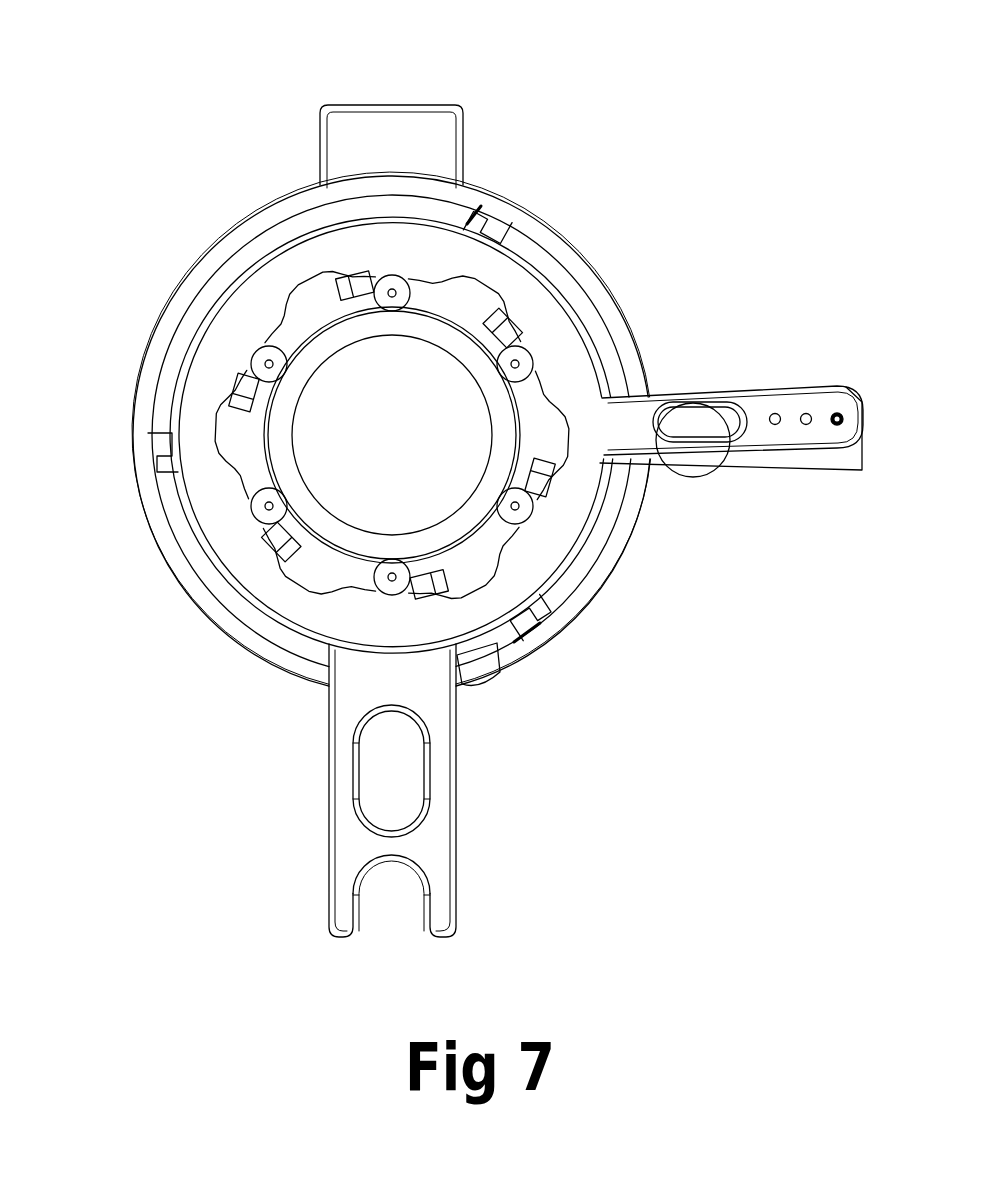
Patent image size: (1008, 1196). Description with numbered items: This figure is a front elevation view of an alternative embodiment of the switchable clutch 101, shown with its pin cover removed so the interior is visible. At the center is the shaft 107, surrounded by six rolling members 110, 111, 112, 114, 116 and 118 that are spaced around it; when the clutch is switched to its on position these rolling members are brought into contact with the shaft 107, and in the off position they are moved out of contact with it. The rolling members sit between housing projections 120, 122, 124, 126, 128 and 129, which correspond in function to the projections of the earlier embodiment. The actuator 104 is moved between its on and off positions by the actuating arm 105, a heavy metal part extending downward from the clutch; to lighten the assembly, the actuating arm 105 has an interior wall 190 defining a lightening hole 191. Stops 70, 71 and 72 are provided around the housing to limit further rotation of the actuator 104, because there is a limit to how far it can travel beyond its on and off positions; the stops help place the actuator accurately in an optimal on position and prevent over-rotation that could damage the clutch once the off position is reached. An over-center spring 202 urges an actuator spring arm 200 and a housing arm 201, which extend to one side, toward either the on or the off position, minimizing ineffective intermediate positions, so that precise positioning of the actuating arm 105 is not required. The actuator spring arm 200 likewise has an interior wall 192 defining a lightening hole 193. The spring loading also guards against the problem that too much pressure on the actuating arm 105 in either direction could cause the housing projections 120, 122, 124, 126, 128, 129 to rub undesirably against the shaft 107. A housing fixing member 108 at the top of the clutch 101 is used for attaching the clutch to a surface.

The stop 70 is at (483, 205).
The stop 71 is at (540, 627).
The stop 72 is at (157, 463).
The clutch 101 is at (132, 357).
The actuator 104 is at (487, 262).
The actuating arm 105 is at (456, 812).
The shaft 107 is at (275, 347).
The housing fixing member 108 is at (412, 103).
The rolling member 110 is at (268, 363).
The rolling member 111 is at (388, 290).
The rolling member 112 is at (518, 362).
The rolling member 114 is at (515, 506).
The rolling member 116 is at (391, 578).
The rolling member 118 is at (268, 506).
The housing projection 120 is at (472, 330).
The housing projection 122 is at (527, 407).
The housing projection 124 is at (453, 558).
The housing projection 126 is at (315, 557).
The housing projection 128 is at (250, 440).
The housing projection 129 is at (308, 317).
The interior wall 190 is at (357, 762).
The lightening hole 191 is at (390, 796).
The interior wall 192 is at (693, 427).
The lightening hole 193 is at (730, 410).
The actuator spring arm 200 is at (858, 473).
The housing arm 201 is at (803, 477).
The over-center spring 202 is at (694, 477).